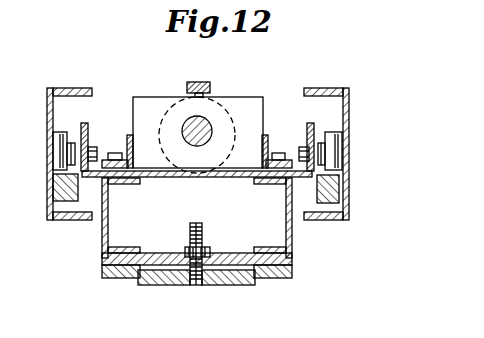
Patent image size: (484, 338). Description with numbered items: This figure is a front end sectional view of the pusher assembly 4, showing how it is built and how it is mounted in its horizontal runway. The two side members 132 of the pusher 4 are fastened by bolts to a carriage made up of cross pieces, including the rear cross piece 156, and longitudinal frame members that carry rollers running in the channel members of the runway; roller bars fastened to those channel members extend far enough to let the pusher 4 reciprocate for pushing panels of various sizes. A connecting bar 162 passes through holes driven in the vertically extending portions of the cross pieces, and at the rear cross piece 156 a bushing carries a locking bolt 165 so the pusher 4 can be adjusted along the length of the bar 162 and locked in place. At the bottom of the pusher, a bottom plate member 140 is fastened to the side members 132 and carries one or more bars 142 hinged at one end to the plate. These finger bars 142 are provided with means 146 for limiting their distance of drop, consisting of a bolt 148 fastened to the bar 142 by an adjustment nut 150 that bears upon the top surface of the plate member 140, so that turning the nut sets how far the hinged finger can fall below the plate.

The pusher assembly 4 is at (253, 95).
The side member 132 is at (102, 236).
The bottom plate member 140 is at (292, 258).
The bar 142 is at (230, 285).
The means for limiting the distance of drop 146 is at (204, 232).
The bolt 148 is at (200, 223).
The adjustment nut 150 is at (210, 248).
The cross piece 156 is at (163, 177).
The connecting bar 162 is at (185, 135).
The locking bolt 165 is at (200, 82).